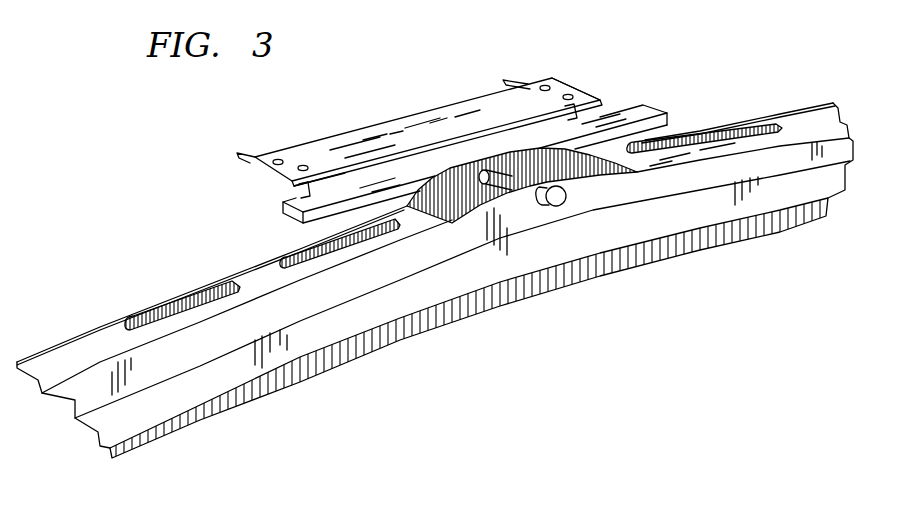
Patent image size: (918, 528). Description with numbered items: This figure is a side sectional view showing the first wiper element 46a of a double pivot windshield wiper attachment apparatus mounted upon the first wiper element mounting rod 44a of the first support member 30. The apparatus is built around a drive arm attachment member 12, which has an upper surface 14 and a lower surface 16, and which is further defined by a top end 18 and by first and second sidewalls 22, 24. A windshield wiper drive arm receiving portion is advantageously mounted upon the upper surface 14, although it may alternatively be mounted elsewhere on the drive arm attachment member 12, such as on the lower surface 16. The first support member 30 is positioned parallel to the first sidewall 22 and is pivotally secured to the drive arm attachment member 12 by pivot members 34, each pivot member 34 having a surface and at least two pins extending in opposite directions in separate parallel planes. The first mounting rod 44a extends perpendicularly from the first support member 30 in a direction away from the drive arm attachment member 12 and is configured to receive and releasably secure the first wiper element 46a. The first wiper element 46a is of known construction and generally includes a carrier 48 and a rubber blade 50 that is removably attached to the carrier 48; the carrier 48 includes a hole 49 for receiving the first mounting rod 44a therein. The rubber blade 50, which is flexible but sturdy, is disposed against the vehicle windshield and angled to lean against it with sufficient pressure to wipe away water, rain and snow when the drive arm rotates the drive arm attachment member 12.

The drive arm attachment member 12 is at (573, 93).
The upper surface 14 is at (443, 120).
The lower surface 16 is at (253, 172).
The top end 18 is at (563, 82).
The first sidewall 22 is at (347, 133).
The second sidewall 24 is at (345, 168).
The first support member 30 is at (667, 107).
The pivot member 34 is at (587, 98).
The first wiper element mounting rod 44a is at (560, 203).
The first wiper element 46a is at (55, 347).
The carrier 48 is at (800, 118).
The hole 49 is at (535, 204).
The rubber blade 50 is at (717, 230).